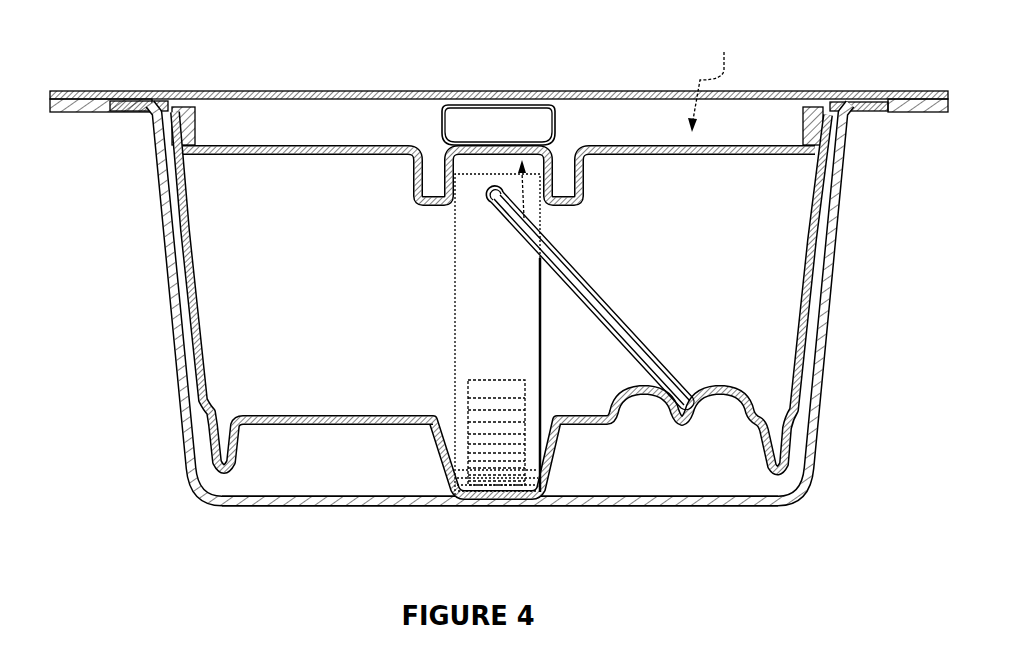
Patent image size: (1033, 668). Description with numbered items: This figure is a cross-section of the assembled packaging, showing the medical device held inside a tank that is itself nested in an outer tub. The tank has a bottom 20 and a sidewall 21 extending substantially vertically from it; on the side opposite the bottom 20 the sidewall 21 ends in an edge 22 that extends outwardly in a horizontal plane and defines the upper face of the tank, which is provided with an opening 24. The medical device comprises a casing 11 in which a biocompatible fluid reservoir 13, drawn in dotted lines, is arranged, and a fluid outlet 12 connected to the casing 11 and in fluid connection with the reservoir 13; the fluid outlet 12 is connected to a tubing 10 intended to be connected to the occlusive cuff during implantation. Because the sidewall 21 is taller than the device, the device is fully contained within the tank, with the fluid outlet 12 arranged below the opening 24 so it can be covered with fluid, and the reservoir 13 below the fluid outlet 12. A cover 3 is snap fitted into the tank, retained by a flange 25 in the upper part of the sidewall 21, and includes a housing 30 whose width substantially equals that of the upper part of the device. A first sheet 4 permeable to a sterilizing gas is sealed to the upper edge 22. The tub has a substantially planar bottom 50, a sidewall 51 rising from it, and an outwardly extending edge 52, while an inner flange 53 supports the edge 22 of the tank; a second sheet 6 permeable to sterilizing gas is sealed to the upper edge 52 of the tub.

The second sheet 6 is at (84, 95).
The edge of the tub 52 is at (80, 107).
The edge of the tank 22 is at (137, 108).
The flange 25 is at (200, 122).
The cover 3 is at (327, 147).
The first sheet 4 is at (385, 112).
The opening 24 is at (712, 83).
The inner flange 53 is at (862, 93).
The fluid outlet 12 is at (483, 200).
The housing 30 is at (541, 218).
The sidewall 21 is at (182, 258).
The tubing 10 is at (605, 306).
The casing 11 is at (465, 311).
The sidewall 51 is at (175, 352).
The biocompatible fluid reservoir 13 is at (468, 385).
The bottom of the tub 50 is at (265, 507).
The bottom of the tank 20 is at (300, 425).